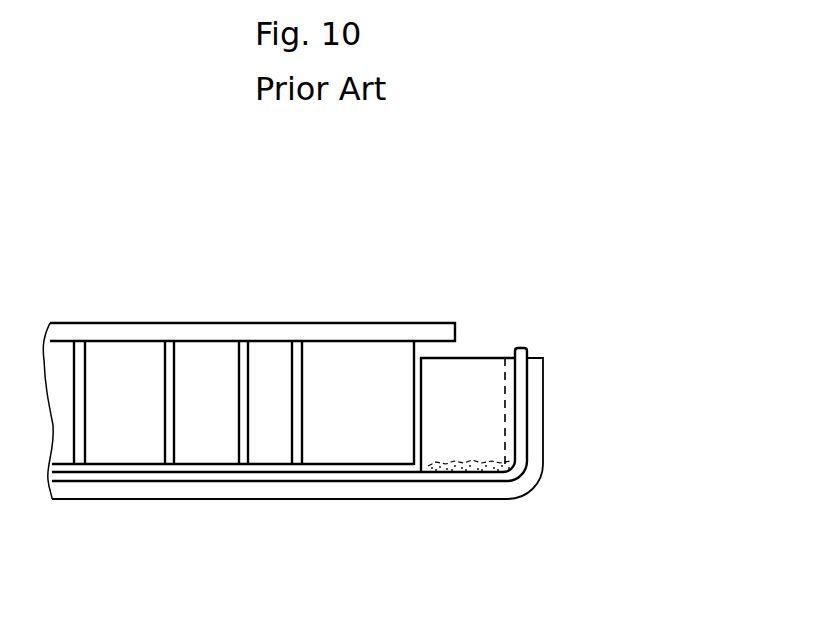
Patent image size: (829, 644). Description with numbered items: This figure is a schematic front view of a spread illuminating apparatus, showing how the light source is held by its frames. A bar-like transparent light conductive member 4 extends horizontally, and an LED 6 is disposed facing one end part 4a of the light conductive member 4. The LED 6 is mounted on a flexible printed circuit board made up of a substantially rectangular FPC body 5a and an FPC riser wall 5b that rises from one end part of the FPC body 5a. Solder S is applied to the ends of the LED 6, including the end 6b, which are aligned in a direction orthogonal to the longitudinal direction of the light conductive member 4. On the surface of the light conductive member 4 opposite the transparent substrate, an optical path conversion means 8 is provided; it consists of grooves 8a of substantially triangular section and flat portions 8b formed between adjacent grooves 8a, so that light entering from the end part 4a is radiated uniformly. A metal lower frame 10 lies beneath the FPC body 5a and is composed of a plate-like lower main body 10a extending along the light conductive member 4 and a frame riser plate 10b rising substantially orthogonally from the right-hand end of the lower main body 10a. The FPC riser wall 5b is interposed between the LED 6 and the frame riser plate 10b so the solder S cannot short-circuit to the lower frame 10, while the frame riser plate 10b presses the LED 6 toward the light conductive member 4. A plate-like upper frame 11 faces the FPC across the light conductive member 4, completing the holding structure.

The light conductive member 4 is at (335, 442).
The one end part of the light conductive member 4a is at (412, 387).
The FPC body 5a is at (385, 476).
The FPC riser wall 5b is at (521, 350).
The LED 6 is at (472, 378).
The end of the LED 6b is at (447, 443).
The optical path conversion means 8 is at (113, 221).
The grooves 8a is at (170, 352).
The flat portions 8b is at (122, 366).
The lower frame 10 is at (670, 413).
The lower main body 10a is at (482, 500).
The frame riser plate 10b is at (535, 422).
The upper frame 11 is at (272, 335).
The solder S is at (458, 477).